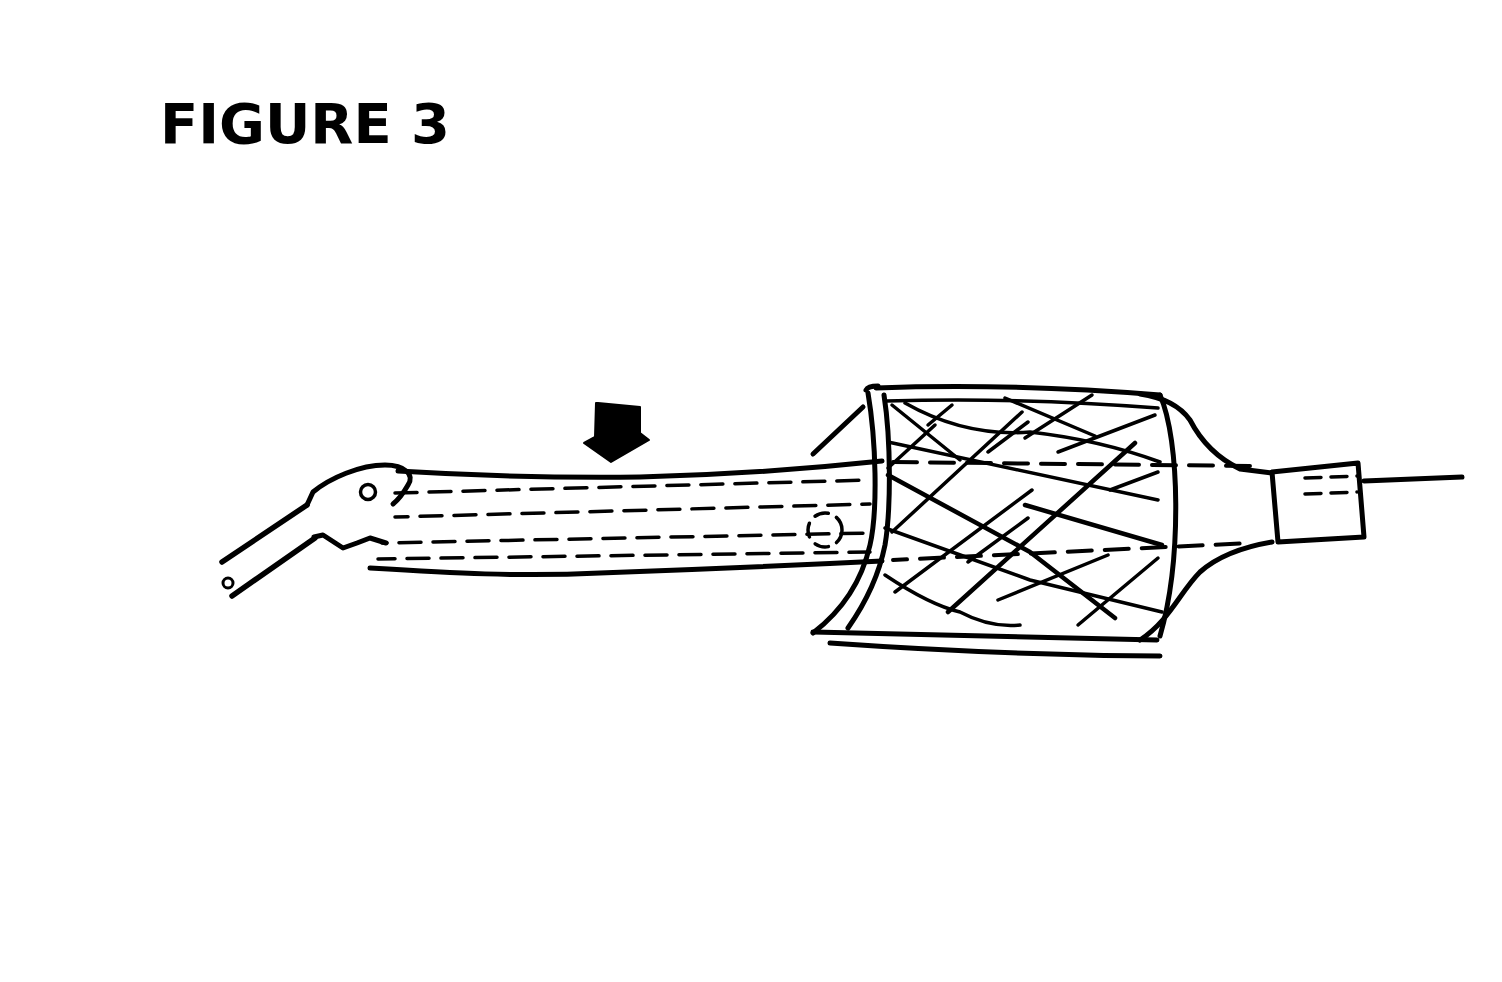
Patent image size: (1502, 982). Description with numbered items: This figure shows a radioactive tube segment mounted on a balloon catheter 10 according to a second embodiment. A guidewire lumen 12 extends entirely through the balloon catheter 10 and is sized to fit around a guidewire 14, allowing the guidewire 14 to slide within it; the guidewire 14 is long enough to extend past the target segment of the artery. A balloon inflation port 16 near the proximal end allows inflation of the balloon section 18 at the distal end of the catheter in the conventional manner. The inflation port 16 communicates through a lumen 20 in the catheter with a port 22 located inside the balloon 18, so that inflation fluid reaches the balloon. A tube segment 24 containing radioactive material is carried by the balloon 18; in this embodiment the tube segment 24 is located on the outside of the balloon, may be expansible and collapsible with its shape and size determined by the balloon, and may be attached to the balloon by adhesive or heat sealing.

The balloon catheter 10 is at (616, 411).
The guidewire lumen 12 is at (440, 493).
The guidewire 14 is at (360, 485).
The balloon inflation port 16 is at (225, 589).
The balloon section 18 is at (1203, 428).
The lumen 20 is at (414, 551).
The port 22 is at (808, 548).
The tube segment 24 is at (938, 660).